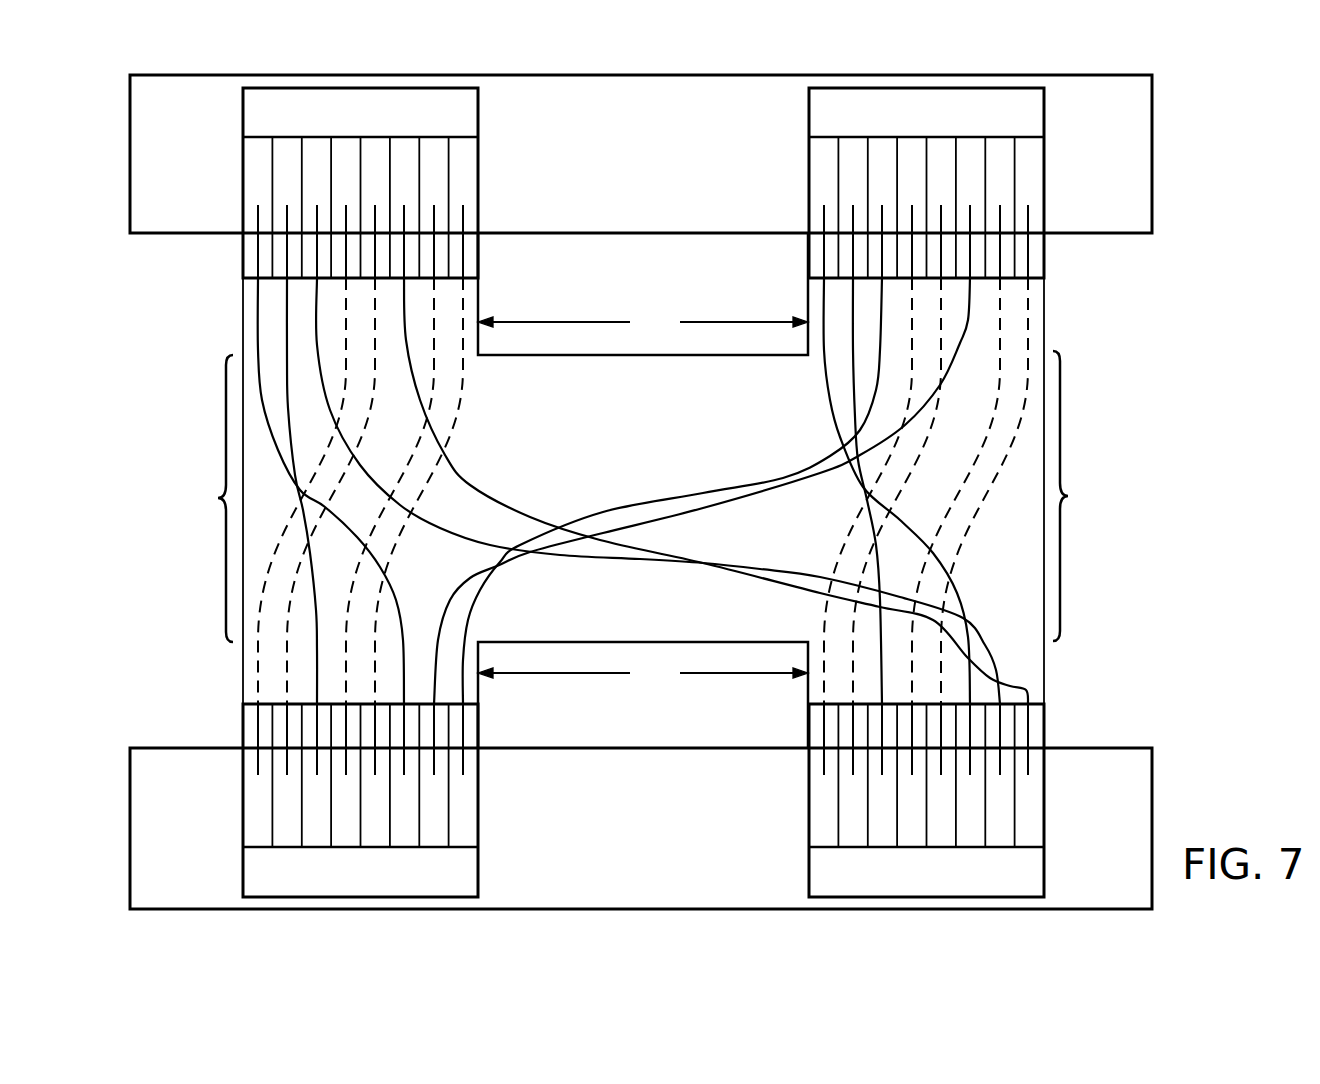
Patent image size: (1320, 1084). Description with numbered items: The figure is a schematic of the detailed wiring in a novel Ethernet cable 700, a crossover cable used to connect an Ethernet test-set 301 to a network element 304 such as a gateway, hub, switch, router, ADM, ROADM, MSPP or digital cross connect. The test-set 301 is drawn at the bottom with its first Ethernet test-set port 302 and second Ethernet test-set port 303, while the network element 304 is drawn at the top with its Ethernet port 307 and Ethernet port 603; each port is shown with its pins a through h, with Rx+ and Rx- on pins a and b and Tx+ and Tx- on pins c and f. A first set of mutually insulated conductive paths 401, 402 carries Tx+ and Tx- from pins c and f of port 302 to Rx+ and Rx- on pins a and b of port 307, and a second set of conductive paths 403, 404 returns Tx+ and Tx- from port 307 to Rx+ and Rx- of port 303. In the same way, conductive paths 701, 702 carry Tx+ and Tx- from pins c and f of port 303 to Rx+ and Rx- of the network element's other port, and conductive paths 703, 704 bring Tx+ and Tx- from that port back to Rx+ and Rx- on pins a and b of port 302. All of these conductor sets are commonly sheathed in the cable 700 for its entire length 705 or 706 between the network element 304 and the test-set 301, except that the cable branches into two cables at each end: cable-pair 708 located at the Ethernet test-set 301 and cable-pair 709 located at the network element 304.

The Ethernet test-set 301 is at (187, 747).
The first Ethernet test-set port 302 is at (480, 862).
The second Ethernet test-set port 303 is at (1046, 862).
The network element 304 is at (1155, 205).
The Ethernet port 307 is at (480, 113).
The Ethernet port 603 is at (1046, 113).
The conductive path 401 is at (258, 288).
The conductive path 402 is at (287, 315).
The conductive path 403 is at (313, 327).
The conductive path 404 is at (405, 290).
The Ethernet cable 700 is at (1194, 458).
The conductive path 701 is at (823, 365).
The conductive path 702 is at (852, 390).
The conductive path 703 is at (808, 460).
The conductive path 704 is at (958, 343).
The cable length 705 is at (1088, 496).
The cable length 706 is at (199, 498).
The cable-pair 708 is at (643, 695).
The cable-pair 709 is at (643, 294).